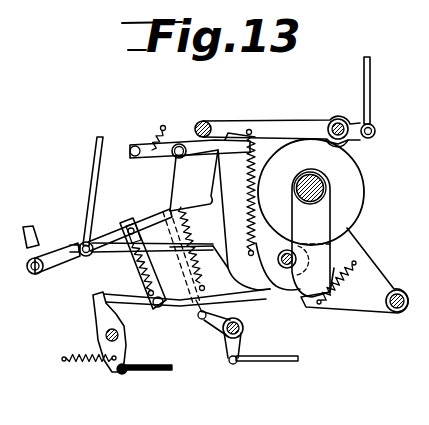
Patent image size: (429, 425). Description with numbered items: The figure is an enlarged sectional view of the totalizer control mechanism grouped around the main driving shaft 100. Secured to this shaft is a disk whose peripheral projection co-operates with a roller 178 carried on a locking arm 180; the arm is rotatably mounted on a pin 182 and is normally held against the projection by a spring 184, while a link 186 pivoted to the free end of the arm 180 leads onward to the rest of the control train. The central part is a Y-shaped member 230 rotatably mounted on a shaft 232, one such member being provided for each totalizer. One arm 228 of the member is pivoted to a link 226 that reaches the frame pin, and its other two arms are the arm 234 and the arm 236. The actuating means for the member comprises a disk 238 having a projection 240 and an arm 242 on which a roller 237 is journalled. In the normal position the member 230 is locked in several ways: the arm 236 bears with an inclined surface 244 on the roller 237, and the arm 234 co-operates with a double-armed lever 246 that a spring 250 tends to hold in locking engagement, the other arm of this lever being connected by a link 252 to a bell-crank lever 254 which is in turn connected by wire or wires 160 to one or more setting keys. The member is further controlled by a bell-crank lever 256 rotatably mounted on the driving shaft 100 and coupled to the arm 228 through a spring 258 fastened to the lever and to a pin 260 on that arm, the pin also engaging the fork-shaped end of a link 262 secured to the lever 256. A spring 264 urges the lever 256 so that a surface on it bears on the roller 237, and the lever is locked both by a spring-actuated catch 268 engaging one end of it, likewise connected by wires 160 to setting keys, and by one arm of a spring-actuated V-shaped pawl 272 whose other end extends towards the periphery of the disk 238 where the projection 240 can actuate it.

The main driving shaft 100 is at (330, 188).
The wire 160 is at (165, 370).
The roller 178 is at (338, 118).
The locking arm 180 is at (229, 125).
The pin 182 is at (201, 120).
The spring 184 is at (221, 163).
The link 186 is at (370, 73).
The link 226 is at (92, 158).
The arm 228 is at (108, 238).
The Y-shaped member 230 is at (160, 250).
The shaft 232 is at (212, 198).
The arm 234 is at (221, 175).
The arm 236 is at (272, 302).
The roller 237 is at (292, 240).
The disk 238 is at (298, 147).
The projection 240 is at (345, 142).
The arm 242 is at (294, 263).
The inclined surface 244 is at (308, 302).
The double-armed lever 246 is at (169, 147).
The spring 250 is at (158, 138).
The link 252 is at (197, 307).
The bell-crank lever 254 is at (217, 324).
The bell-crank lever 256 is at (230, 293).
The spring 258 is at (143, 275).
The pin 260 is at (132, 222).
The link 262 is at (133, 258).
The spring 264 is at (193, 256).
The spring-actuated catch 268 is at (98, 315).
The V-shaped pawl 272 is at (380, 306).